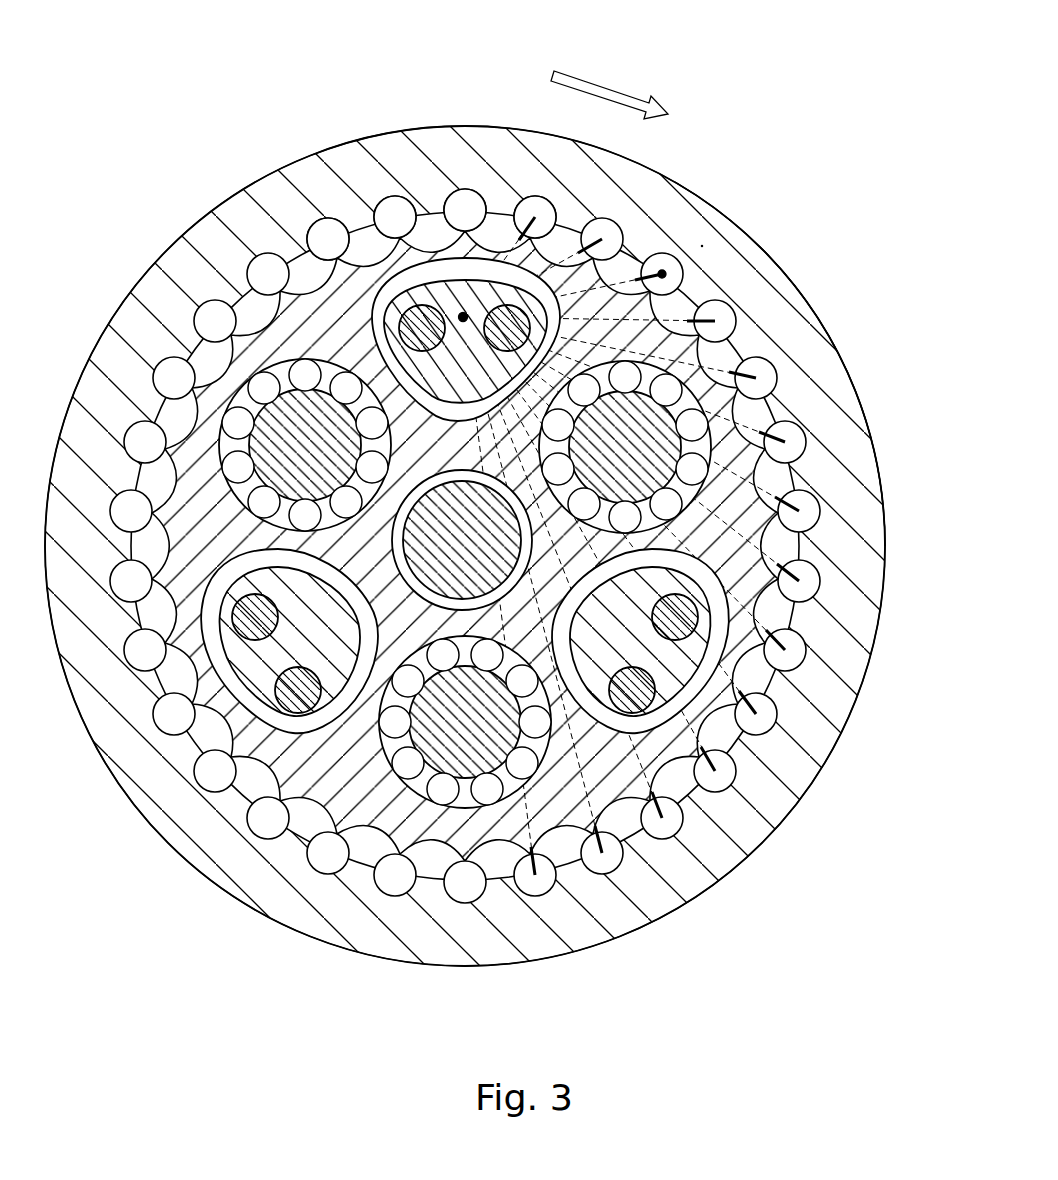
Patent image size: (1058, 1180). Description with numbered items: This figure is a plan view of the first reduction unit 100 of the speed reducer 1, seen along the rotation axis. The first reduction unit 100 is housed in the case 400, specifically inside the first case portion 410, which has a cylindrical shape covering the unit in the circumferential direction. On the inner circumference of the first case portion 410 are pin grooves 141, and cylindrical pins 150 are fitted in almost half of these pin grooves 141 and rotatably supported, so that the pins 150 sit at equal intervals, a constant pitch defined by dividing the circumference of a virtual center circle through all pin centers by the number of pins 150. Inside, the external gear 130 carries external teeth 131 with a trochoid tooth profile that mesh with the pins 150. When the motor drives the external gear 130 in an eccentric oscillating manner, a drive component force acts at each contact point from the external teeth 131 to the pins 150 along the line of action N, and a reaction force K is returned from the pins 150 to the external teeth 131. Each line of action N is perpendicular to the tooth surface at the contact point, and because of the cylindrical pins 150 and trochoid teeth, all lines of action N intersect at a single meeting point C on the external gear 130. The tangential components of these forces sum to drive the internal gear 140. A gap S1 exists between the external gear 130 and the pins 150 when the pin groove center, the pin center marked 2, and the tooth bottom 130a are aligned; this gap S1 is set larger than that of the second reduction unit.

The speed reducer 1 is at (796, 162).
The point 2 is at (702, 246).
The first reduction unit 100 is at (240, 180).
The external gear 130 is at (290, 250).
The tooth bottom 130a is at (347, 232).
The external teeth 131 is at (390, 205).
The internal gear 140 is at (468, 228).
The pin grooves 141 is at (480, 200).
The pin 150 is at (517, 200).
The case 400 is at (862, 398).
The first case portion 410 is at (796, 287).
The meeting point C is at (463, 322).
The reaction force K is at (606, 236).
The line of action N is at (672, 255).
The gap S1 is at (517, 215).